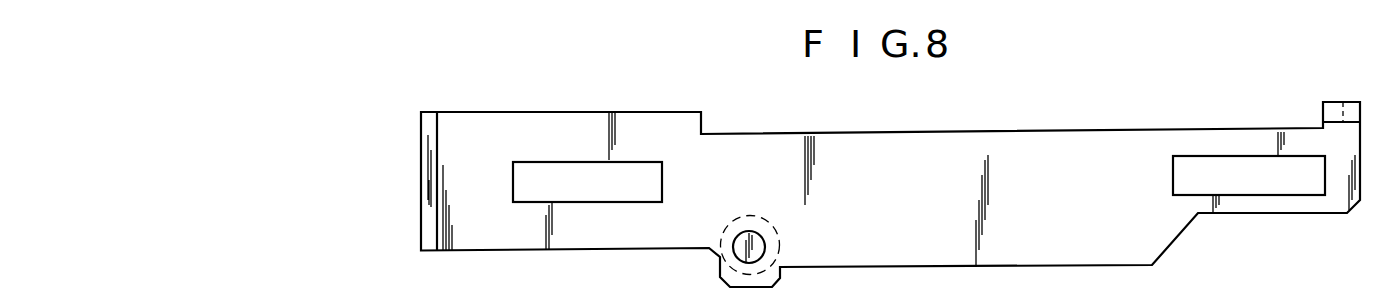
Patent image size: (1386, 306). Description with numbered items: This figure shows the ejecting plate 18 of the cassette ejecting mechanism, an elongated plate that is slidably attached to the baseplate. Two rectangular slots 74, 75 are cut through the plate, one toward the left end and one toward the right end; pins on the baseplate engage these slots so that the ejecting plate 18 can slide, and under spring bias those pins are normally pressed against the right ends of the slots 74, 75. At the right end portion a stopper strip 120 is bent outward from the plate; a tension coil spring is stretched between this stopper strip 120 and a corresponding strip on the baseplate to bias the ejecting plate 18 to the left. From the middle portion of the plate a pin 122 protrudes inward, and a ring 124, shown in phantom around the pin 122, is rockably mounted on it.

The ejecting plate 18 is at (921, 255).
The slot 74 is at (582, 197).
The slot 75 is at (1175, 178).
The stopper strip 120 is at (1333, 107).
The pin 122 is at (760, 245).
The ring 124 is at (756, 224).